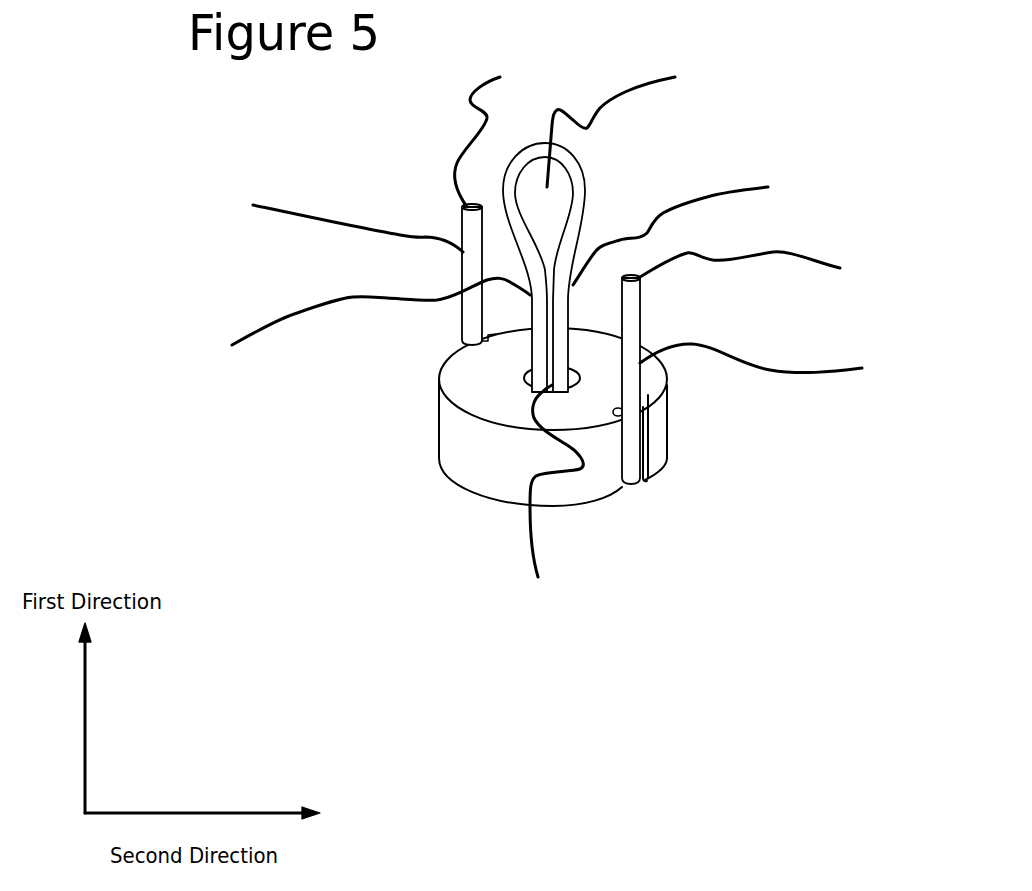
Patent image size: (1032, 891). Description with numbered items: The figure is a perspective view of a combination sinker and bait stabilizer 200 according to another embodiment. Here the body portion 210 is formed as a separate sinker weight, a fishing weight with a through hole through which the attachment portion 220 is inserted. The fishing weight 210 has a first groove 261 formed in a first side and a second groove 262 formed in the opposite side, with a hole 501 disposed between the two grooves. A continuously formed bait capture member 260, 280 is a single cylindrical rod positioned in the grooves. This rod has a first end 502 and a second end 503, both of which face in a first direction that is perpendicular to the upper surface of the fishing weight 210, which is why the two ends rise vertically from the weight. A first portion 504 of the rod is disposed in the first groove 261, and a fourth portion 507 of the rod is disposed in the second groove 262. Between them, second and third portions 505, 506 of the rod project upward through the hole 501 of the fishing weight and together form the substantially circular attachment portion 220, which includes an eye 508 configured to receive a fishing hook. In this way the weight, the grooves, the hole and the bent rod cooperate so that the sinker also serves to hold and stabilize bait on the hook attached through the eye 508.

The combination sinker and bait stabilizer 200 is at (400, 275).
The body portion 210 is at (463, 450).
The attachment portion 220 is at (577, 180).
The capture member 260 is at (635, 297).
The first groove 261 is at (632, 410).
The second groove 262 is at (462, 337).
The capture member 280 is at (468, 217).
The hole 501 is at (554, 504).
The first end 502 is at (771, 266).
The second end 503 is at (509, 128).
The first portion 504 is at (776, 358).
The second portion 505 is at (700, 224).
The third portion 506 is at (350, 322).
The fourth portion 507 is at (326, 219).
The eye 508 is at (634, 118).